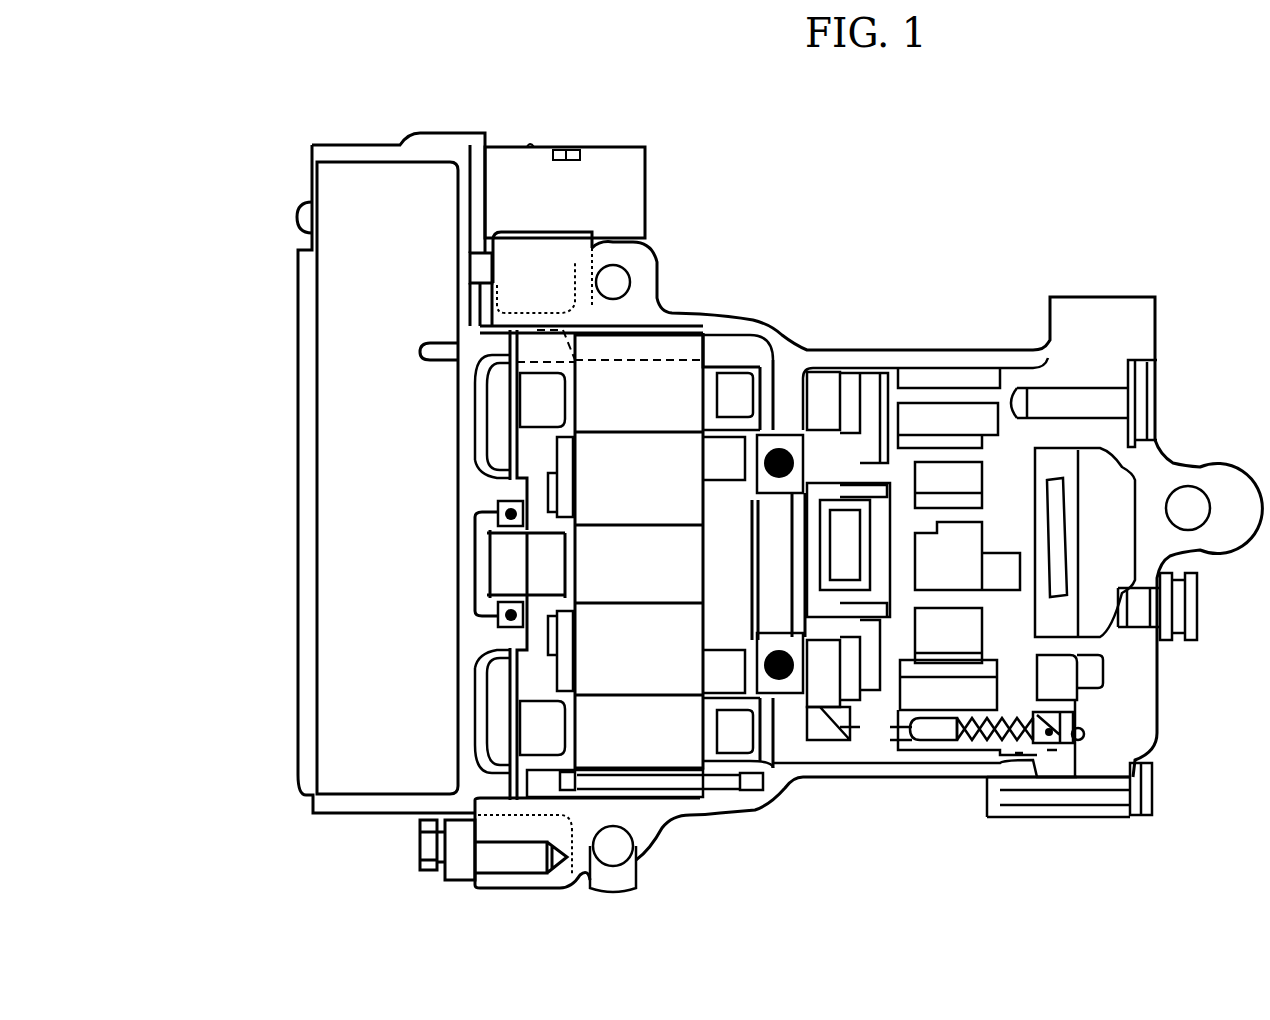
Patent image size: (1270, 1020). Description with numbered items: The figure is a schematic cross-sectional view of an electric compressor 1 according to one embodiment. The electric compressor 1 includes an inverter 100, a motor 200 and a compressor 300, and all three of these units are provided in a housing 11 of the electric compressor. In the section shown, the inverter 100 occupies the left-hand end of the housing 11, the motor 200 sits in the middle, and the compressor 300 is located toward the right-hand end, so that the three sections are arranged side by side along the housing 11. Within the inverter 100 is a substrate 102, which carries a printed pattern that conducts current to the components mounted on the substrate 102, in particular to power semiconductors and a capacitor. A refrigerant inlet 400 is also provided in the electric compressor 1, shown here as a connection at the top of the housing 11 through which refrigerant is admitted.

The electric compressor 1 is at (778, 151).
The housing 11 is at (470, 790).
The inverter 100 is at (357, 768).
The substrate 102 is at (298, 342).
The motor 200 is at (678, 752).
The compressor 300 is at (1073, 740).
The refrigerant inlet 400 is at (645, 187).